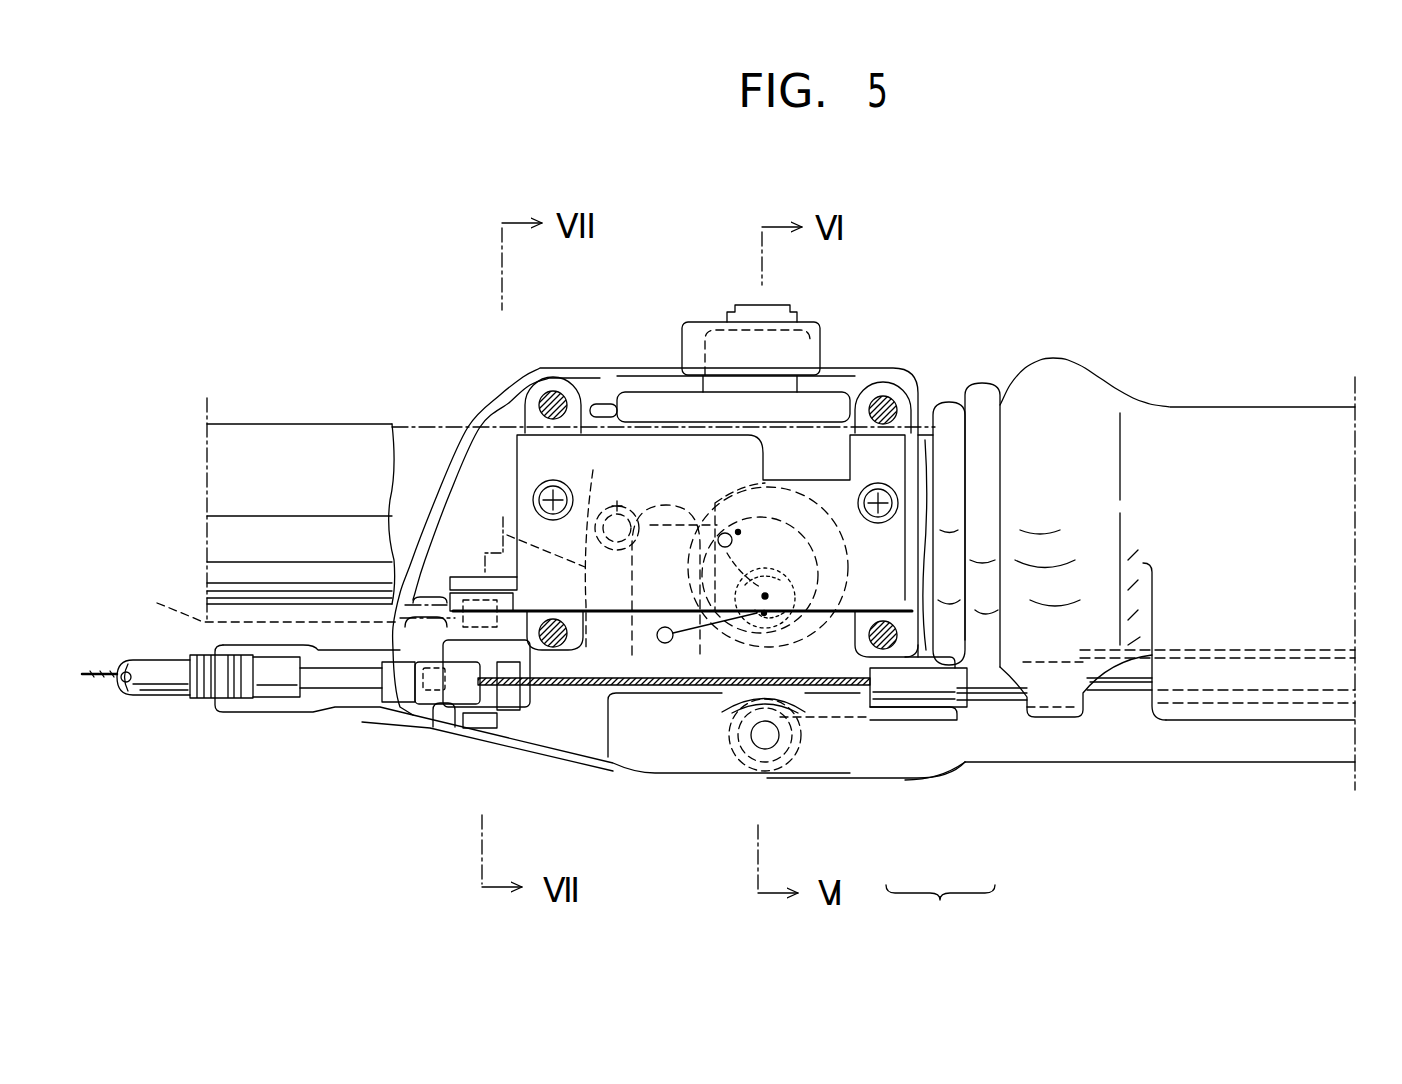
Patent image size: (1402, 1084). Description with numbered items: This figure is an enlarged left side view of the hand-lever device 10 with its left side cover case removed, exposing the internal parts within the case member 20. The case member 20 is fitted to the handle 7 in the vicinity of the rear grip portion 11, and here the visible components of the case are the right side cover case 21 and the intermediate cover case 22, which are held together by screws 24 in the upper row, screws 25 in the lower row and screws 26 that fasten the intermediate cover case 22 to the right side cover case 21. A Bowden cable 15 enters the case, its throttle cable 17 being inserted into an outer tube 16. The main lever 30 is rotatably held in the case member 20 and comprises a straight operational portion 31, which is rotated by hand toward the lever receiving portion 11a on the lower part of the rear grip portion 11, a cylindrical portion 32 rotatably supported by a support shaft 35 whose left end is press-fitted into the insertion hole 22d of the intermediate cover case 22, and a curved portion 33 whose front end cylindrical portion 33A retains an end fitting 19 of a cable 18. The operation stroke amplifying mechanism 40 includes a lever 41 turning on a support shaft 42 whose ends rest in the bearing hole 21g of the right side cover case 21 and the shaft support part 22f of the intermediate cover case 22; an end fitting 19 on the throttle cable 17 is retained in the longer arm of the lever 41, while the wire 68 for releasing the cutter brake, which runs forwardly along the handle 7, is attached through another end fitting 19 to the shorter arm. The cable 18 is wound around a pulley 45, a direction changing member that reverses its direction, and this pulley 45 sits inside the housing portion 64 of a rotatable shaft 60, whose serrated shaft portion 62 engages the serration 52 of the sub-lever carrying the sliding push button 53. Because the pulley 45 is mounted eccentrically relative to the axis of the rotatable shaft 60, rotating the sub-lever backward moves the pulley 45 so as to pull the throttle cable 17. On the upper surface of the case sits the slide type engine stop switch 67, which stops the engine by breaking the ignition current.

The handle 7 is at (306, 437).
The hand-lever device 10 is at (615, 332).
The rear grip portion 11 is at (1223, 425).
The lever receiving portion 11a is at (1265, 722).
The Bowden cable 15 is at (940, 912).
The outer tube 16 is at (988, 712).
The throttle cable 17 is at (825, 700).
The cable 18 is at (673, 520).
The end fitting 19 is at (617, 500).
The case member 20 is at (498, 383).
The right side cover case 21 is at (481, 413).
The bearing hole 21g is at (463, 740).
The intermediate cover case 22 is at (647, 742).
The insertion hole 22d is at (760, 722).
The shaft support part 22f is at (276, 606).
The screws 24 is at (553, 400).
The screws 25 is at (553, 625).
The screws 26 is at (533, 498).
The main lever 30 is at (1057, 770).
The straight operational portion 31 is at (1145, 765).
The cylindrical portion 32 is at (700, 752).
The curved portion 33 is at (505, 542).
The front end cylindrical portion 33A is at (595, 505).
The support shaft 35 is at (777, 742).
The operation stroke amplifying mechanism 40 is at (437, 710).
The lever 41 is at (408, 687).
The support shaft 42 is at (380, 660).
The pulley 45 is at (725, 532).
The serration 52 is at (726, 582).
The push button 53 is at (770, 312).
The rotatable shaft 60 is at (806, 563).
The serrated shaft portion 62 is at (695, 578).
The housing portion 64 is at (802, 515).
The engine stop switch 67 is at (694, 330).
The wire 68 is at (112, 680).